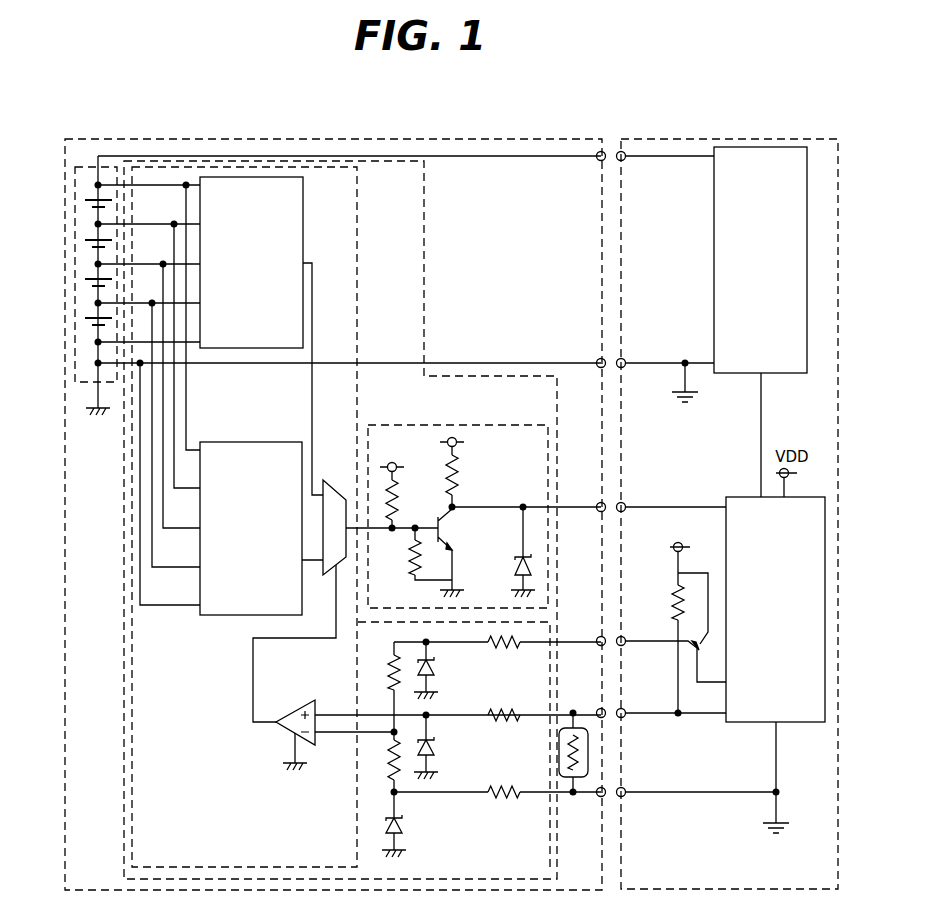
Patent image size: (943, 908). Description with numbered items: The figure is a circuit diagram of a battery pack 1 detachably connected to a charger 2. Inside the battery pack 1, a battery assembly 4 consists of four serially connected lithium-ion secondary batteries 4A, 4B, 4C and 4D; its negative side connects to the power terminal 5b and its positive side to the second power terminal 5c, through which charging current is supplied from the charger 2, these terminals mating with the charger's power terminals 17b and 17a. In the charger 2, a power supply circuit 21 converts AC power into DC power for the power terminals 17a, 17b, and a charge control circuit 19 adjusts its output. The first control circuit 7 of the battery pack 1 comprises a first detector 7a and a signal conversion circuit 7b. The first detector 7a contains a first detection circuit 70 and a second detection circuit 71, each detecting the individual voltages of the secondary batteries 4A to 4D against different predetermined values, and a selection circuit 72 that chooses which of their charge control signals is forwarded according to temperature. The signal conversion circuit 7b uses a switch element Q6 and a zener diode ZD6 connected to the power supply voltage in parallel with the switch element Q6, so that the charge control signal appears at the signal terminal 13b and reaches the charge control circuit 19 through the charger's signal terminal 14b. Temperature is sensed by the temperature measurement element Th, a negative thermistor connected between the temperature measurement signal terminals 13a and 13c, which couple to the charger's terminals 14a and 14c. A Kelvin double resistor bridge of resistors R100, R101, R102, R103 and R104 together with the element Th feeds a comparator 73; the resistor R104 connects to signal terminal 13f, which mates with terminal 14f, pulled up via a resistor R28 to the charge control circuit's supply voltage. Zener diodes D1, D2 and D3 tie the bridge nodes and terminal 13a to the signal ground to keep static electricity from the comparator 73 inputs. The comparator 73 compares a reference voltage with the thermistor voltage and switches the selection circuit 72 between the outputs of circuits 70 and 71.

The battery pack 1 is at (415, 139).
The charger 2 is at (727, 139).
The battery assembly 4 is at (75, 178).
The secondary battery 4A is at (85, 325).
The secondary battery 4B is at (85, 286).
The secondary battery 4C is at (85, 247).
The secondary battery 4D is at (85, 207).
The power terminal 5b is at (598, 360).
The second power terminal 5c is at (598, 160).
The first control circuit 7 is at (424, 229).
The first detector 7a is at (357, 275).
The signal conversion circuit 7b is at (462, 425).
The temperature measurement signal terminal 13a is at (598, 797).
The signal terminal 13b is at (598, 503).
The temperature measurement signal terminal 13c is at (598, 709).
The signal terminal 13f is at (598, 637).
The signal terminal 14a is at (624, 796).
The signal terminal 14b is at (624, 504).
The signal terminal 14c is at (624, 717).
The signal terminal 14f is at (624, 645).
The power terminal 17a is at (624, 160).
The power terminal 17b is at (624, 360).
The charge control circuit 19 is at (745, 497).
The power supply circuit 21 is at (714, 262).
The first detection circuit 70 is at (303, 218).
The second detection circuit 71 is at (248, 442).
The selection circuit 72 is at (330, 486).
The comparator 73 is at (298, 708).
The switch element Q6 is at (490, 518).
The zener diode ZD6 is at (503, 552).
The resistor R28 is at (681, 630).
The resistor R100 is at (497, 804).
The resistor R101 is at (507, 728).
The resistor R102 is at (369, 687).
The resistor R103 is at (369, 762).
The resistor R104 is at (497, 654).
The zener diode D1 is at (438, 675).
The zener diode D2 is at (438, 751).
The zener diode D3 is at (407, 828).
The temperature measurement element Th is at (558, 755).